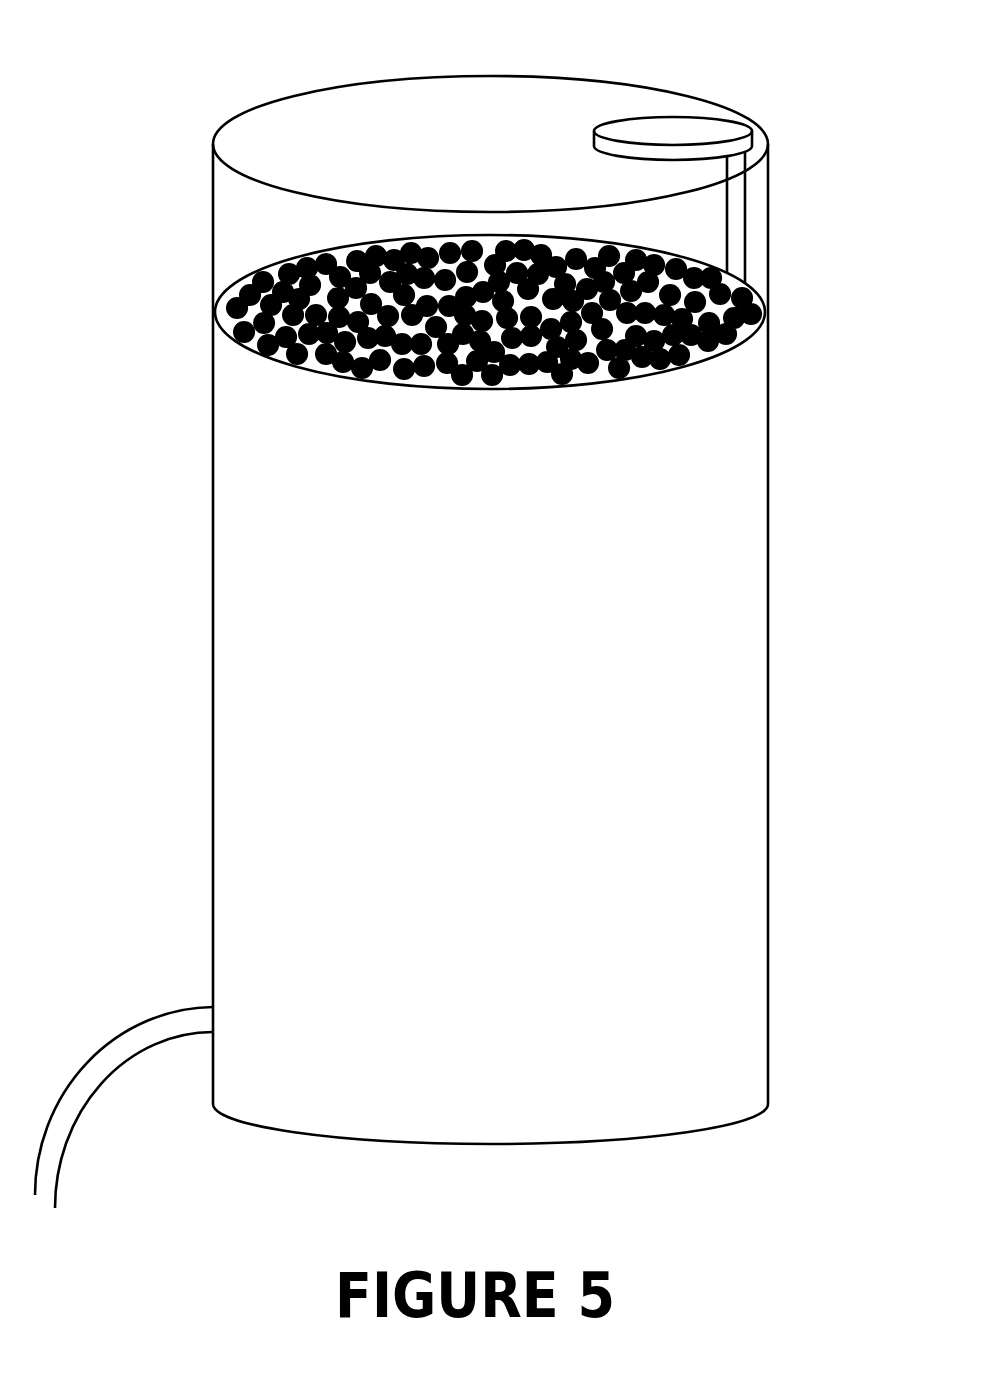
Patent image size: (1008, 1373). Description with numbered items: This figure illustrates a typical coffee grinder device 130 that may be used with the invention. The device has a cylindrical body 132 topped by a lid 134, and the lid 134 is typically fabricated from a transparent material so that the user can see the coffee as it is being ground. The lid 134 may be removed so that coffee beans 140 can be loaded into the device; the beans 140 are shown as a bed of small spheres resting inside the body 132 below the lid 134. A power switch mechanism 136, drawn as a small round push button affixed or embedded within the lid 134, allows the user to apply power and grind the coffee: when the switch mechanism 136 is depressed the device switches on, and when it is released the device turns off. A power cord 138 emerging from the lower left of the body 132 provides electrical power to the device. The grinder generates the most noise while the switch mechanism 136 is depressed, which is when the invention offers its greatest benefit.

The coffee grinder device 130 is at (213, 585).
The body 132 is at (213, 860).
The lid 134 is at (315, 89).
The power switch mechanism 136 is at (753, 132).
The power cord 138 is at (117, 1036).
The coffee beans 140 is at (765, 306).